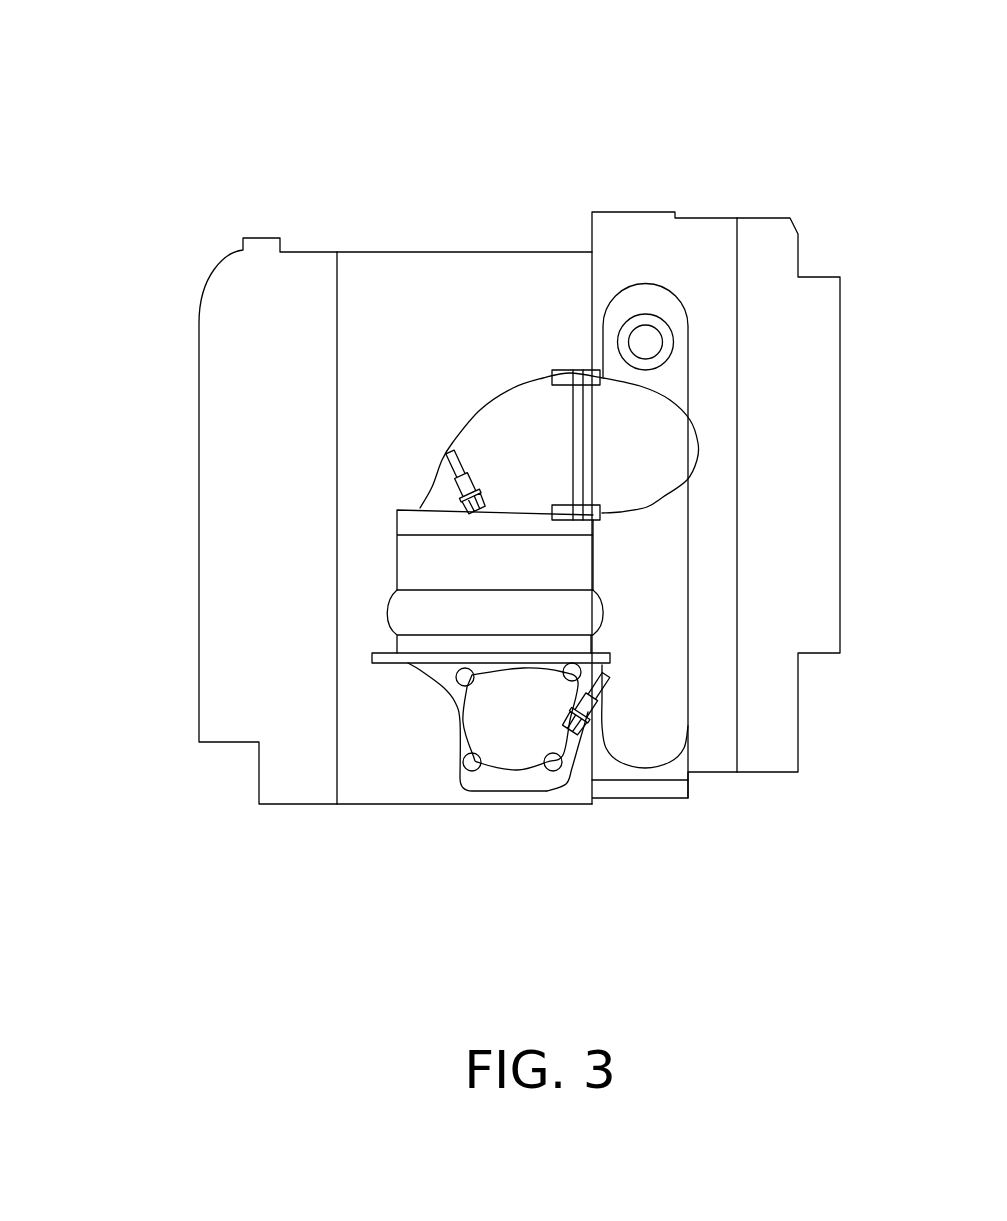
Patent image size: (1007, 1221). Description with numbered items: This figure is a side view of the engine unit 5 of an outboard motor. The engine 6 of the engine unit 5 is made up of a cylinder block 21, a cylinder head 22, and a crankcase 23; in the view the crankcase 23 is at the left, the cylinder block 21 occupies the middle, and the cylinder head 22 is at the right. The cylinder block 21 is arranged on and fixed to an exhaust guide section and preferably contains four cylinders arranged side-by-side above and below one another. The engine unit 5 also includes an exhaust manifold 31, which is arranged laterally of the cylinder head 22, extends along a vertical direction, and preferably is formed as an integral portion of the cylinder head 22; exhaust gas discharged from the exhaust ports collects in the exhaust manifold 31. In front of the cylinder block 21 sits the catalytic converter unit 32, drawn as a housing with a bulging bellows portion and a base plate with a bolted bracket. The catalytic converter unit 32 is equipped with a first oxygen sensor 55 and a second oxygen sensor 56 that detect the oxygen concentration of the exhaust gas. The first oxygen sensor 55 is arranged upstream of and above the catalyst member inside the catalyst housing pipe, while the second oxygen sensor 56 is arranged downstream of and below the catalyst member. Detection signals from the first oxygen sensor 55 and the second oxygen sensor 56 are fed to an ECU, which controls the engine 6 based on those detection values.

The engine unit 5 is at (463, 135).
The engine 6 is at (375, 238).
The cylinder block 21 is at (475, 288).
The cylinder head 22 is at (673, 255).
The crankcase 23 is at (270, 278).
The exhaust manifold 31 is at (650, 540).
The catalytic converter unit 32 is at (368, 585).
The first oxygen sensor 55 is at (453, 485).
The second oxygen sensor 56 is at (568, 722).